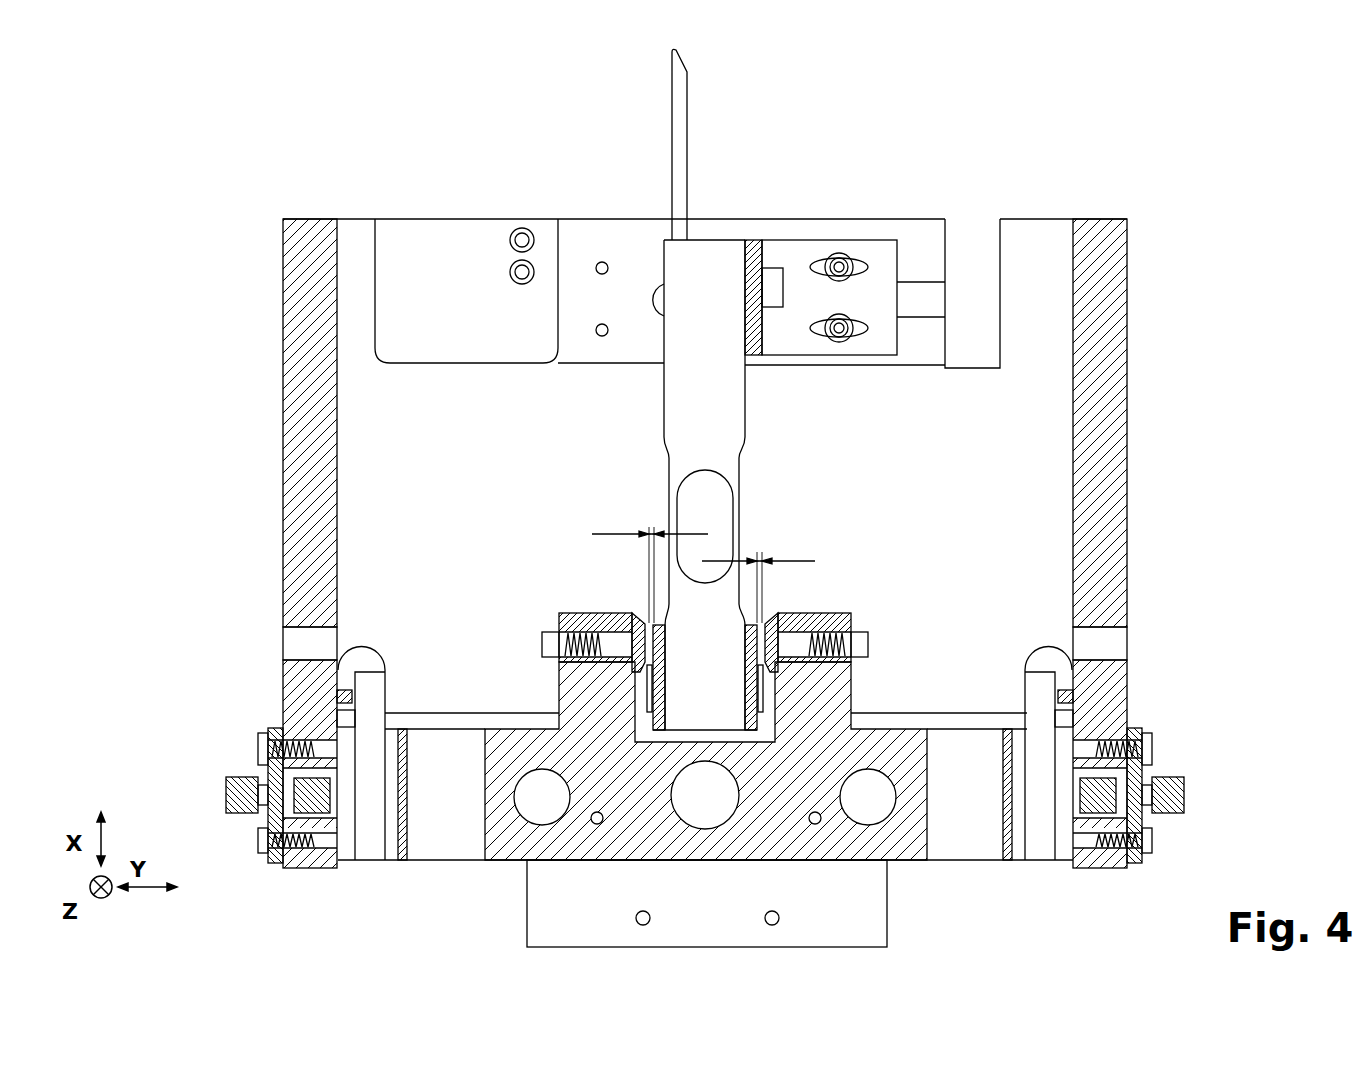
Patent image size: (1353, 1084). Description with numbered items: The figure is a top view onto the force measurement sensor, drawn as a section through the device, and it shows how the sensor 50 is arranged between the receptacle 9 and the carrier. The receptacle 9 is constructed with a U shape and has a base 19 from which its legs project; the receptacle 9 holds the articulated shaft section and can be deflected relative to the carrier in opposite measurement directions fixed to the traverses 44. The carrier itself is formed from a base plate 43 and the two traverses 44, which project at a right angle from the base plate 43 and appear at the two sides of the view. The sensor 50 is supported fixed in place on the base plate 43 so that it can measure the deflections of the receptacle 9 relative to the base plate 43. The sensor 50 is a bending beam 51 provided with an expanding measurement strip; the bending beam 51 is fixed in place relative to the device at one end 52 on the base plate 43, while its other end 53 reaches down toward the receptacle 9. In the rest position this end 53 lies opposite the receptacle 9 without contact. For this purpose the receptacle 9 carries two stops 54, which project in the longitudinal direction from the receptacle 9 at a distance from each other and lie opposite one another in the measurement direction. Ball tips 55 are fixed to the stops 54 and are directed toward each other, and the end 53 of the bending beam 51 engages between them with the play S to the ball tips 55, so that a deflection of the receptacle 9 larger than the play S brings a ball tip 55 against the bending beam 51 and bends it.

The receptacle 9 is at (705, 795).
The base 19 is at (825, 860).
The base plate 43 is at (1033, 246).
The traverses 44 is at (283, 404).
The sensor 50 is at (663, 402).
The bending beam 51 is at (737, 418).
The end 52 is at (712, 254).
The end 53 is at (723, 722).
The stops 54 is at (560, 690).
The ball tips 55 is at (640, 613).
The play S is at (703, 559).